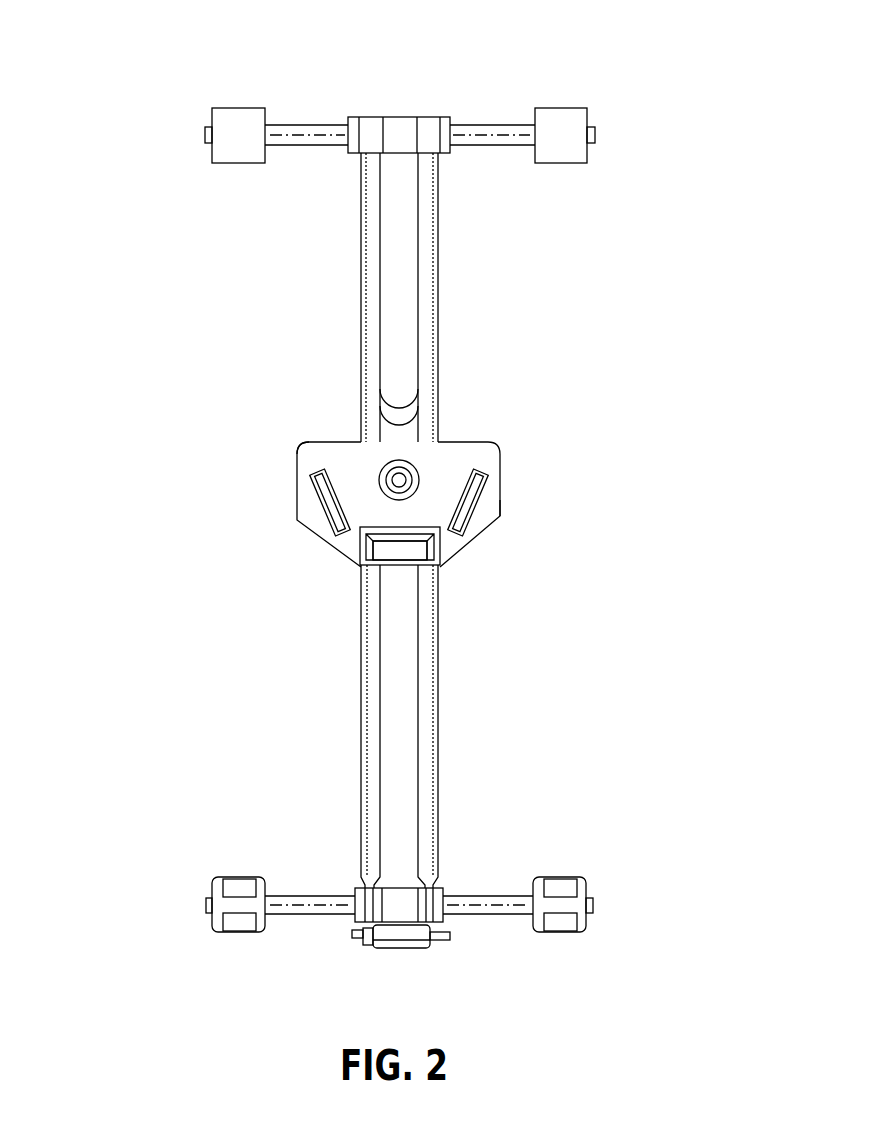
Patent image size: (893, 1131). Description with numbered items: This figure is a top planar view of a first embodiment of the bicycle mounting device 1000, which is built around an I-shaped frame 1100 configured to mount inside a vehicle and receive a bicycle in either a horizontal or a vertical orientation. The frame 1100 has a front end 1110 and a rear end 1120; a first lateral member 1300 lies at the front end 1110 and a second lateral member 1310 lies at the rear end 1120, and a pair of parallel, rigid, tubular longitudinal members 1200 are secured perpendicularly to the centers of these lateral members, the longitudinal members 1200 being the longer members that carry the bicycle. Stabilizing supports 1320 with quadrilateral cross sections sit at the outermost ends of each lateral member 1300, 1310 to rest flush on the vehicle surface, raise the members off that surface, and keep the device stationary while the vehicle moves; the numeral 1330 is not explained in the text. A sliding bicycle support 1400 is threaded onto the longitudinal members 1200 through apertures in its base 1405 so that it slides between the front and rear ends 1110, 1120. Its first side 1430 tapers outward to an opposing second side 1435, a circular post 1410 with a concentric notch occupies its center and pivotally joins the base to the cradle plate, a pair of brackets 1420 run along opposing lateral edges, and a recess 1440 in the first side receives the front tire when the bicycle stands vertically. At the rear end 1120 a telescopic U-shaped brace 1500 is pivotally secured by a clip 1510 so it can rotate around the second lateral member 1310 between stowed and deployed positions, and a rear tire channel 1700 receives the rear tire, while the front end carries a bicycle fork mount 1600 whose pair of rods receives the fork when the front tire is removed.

The bicycle mounting device 1000 is at (616, 76).
The rear end 1120 is at (146, 131).
The stabilizing supports 1320 is at (230, 108).
The second lateral member 1310 is at (503, 123).
The clip 1510 is at (338, 145).
The rear tire channel 1700 is at (397, 124).
The longitudinal members 1200 is at (440, 222).
The U-shaped brace 1500 is at (397, 407).
The sliding bicycle support 1400 is at (500, 448).
The second side 1435 is at (312, 440).
The base 1405 is at (499, 503).
The post 1410 is at (411, 463).
The brackets 1420 is at (299, 512).
The first side 1430 is at (440, 575).
The recess 1440 is at (398, 567).
The frame 1100 is at (440, 655).
The front end 1110 is at (168, 896).
The lower left wheel 1330 is at (235, 882).
The first lateral member 1300 is at (487, 895).
The bicycle fork mount 1600 is at (437, 948).